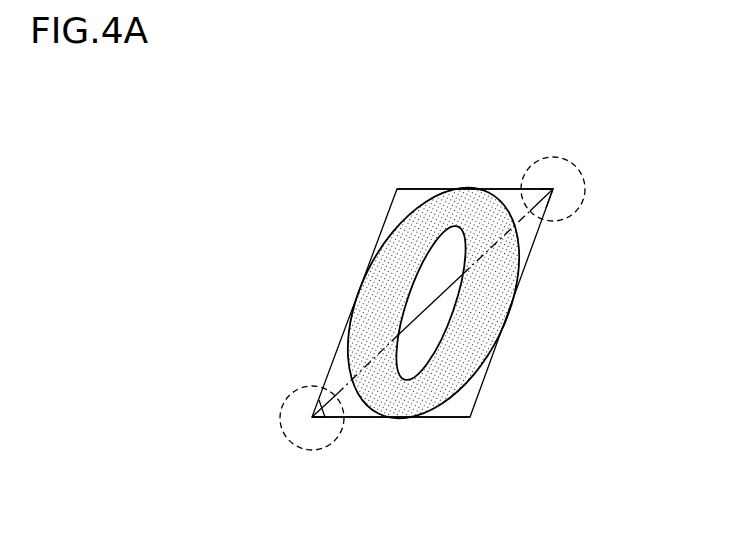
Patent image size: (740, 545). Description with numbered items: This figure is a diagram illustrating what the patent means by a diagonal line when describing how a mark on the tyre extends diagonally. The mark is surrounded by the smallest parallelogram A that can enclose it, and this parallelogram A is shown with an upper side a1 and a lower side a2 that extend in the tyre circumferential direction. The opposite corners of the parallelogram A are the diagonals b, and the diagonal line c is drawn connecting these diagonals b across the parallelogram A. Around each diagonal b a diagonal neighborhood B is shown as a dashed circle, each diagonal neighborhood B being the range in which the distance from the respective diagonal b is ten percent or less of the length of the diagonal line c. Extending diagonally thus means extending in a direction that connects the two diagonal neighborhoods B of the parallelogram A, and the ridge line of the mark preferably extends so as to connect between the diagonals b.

The parallelogram A is at (386, 214).
The upper side a1 is at (423, 188).
The lower side a2 is at (445, 418).
The diagonal neighborhood B is at (582, 162).
The diagonal b is at (553, 189).
The diagonal line c is at (412, 322).